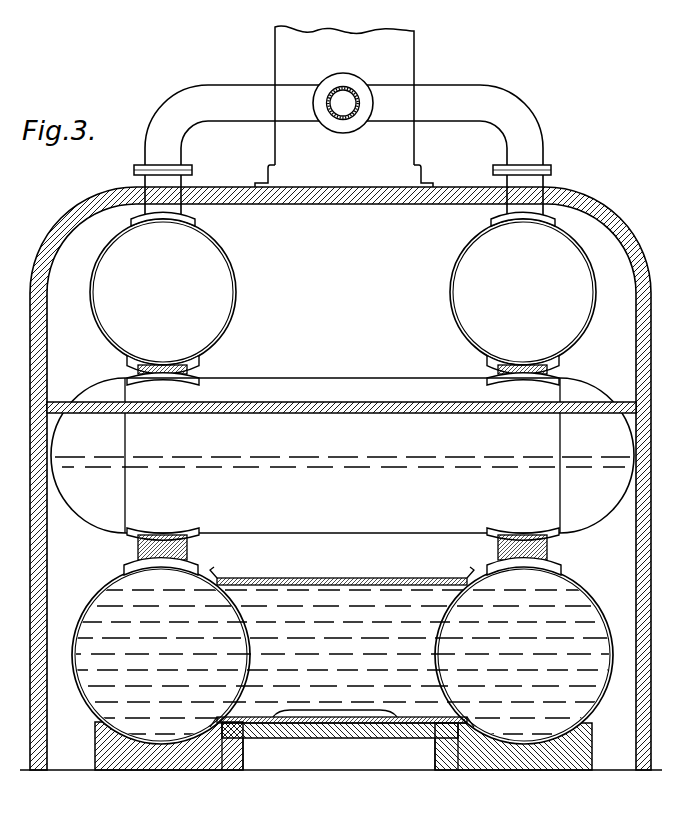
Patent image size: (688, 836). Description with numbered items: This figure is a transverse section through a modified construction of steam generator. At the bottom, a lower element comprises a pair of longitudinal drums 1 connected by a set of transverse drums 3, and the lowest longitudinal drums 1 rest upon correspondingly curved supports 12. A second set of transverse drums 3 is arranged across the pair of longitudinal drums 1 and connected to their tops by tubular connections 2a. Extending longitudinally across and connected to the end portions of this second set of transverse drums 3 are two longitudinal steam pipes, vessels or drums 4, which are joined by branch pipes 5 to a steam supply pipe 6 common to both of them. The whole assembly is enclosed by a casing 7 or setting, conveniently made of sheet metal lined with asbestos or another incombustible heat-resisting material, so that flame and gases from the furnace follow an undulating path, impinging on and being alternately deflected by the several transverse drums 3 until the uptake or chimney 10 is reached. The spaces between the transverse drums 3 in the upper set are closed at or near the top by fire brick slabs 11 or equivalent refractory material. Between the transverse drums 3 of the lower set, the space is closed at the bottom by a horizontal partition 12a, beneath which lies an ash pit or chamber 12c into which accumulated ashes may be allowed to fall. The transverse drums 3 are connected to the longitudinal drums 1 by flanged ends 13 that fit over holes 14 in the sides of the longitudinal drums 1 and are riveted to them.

The longitudinal drum 1 is at (342, 655).
The tubular connection 2a is at (572, 549).
The transverse drum 3 is at (342, 512).
The longitudinal steam pipe, vessel or drum 4 is at (343, 288).
The branch pipe 5 is at (176, 106).
The steam supply pipe 6 is at (337, 100).
The inclosing casing 7 is at (44, 303).
The uptake or chimney 10 is at (344, 106).
The fire brick slab 11 is at (368, 413).
The curved support 12 is at (95, 748).
The horizontal partition 12a is at (420, 733).
The ash pit or chamber 12c is at (339, 754).
The flanged end 13 is at (222, 579).
The hole 14 is at (342, 662).